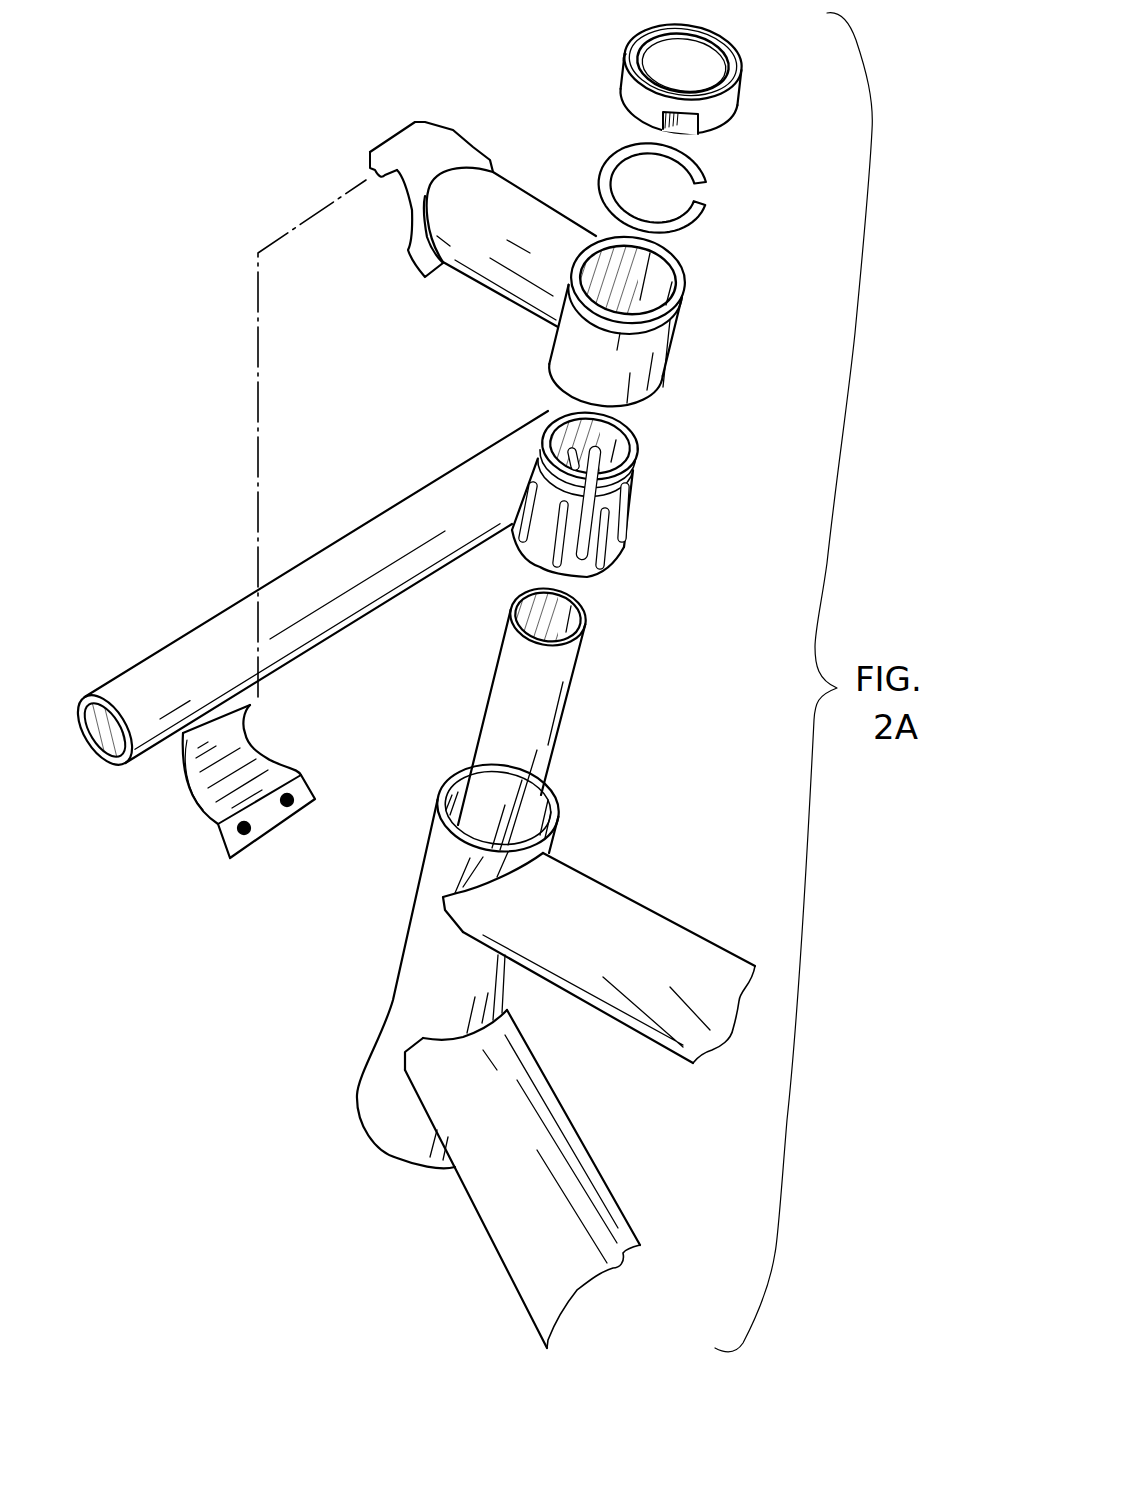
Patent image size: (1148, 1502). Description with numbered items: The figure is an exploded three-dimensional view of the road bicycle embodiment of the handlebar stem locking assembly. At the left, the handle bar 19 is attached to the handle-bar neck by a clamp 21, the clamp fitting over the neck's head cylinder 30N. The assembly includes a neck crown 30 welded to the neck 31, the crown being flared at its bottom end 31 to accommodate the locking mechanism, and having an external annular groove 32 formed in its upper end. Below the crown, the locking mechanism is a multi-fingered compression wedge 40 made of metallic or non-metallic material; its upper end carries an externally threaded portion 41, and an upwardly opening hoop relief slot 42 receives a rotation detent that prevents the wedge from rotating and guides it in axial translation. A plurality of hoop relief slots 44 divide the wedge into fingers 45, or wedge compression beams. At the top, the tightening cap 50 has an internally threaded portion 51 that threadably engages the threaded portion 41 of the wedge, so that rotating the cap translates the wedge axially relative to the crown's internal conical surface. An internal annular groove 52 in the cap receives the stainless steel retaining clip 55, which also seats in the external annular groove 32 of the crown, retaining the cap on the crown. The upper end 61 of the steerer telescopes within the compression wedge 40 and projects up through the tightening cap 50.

The handle bar 19 is at (379, 516).
The clamp 21 is at (395, 122).
The stem head cylinder 30N is at (547, 204).
The neck crown 30 is at (661, 326).
The neck 31 is at (662, 398).
The external annular groove 32 is at (685, 269).
The multi-fingered compression wedge 40 is at (614, 540).
The externally threaded portion 41 is at (633, 462).
The upwardly opening hoop relief slot 42 is at (626, 490).
The hoop relief slots 44 is at (623, 517).
The fingers 45 is at (647, 600).
The tightening cap 50 is at (728, 104).
The internally threaded portion 51 is at (723, 35).
The internal annular groove 52 is at (680, 148).
The retaining clip 55 is at (713, 208).
The upper end of steerer 61 is at (555, 748).